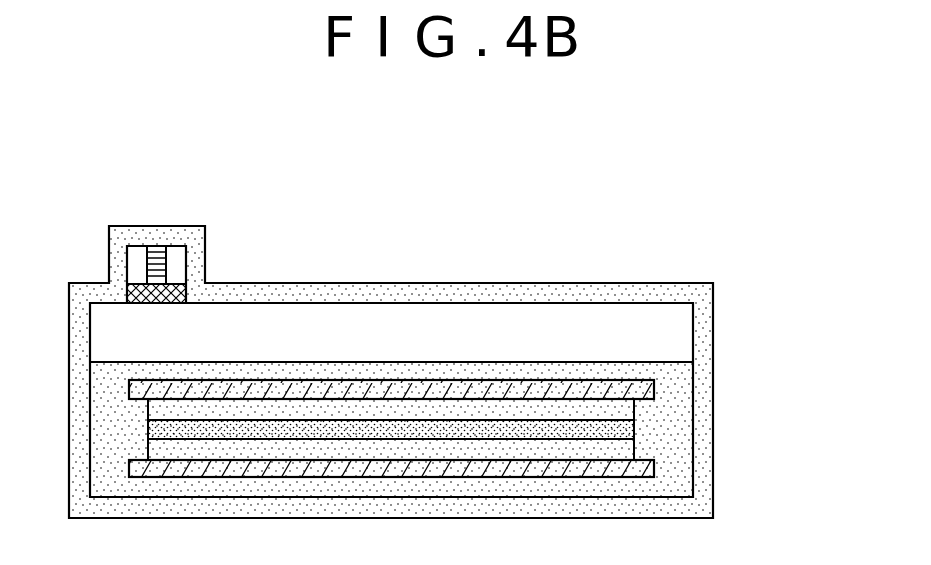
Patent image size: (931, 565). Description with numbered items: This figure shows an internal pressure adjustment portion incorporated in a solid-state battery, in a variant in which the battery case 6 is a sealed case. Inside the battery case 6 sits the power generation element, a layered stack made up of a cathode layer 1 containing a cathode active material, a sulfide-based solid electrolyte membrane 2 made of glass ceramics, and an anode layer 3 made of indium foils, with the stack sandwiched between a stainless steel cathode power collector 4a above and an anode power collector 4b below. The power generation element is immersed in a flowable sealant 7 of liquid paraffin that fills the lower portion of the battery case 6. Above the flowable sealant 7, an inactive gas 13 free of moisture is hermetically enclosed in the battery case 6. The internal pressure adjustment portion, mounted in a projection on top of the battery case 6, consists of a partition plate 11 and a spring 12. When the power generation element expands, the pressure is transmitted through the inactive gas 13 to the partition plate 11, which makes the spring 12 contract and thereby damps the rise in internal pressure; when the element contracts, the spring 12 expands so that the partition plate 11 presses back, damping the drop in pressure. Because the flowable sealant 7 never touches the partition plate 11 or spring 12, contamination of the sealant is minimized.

The cathode layer 1 is at (620, 408).
The sulfide-based solid electrolyte membrane 2 is at (633, 428).
The anode layer 3 is at (620, 446).
The cathode power collector 4a is at (653, 377).
The anode power collector 4b is at (653, 473).
The battery case 6 is at (498, 290).
The flowable sealant 7 is at (553, 362).
The partition plate 11 is at (178, 295).
The spring 12 is at (154, 250).
The inactive gas 13 is at (358, 340).